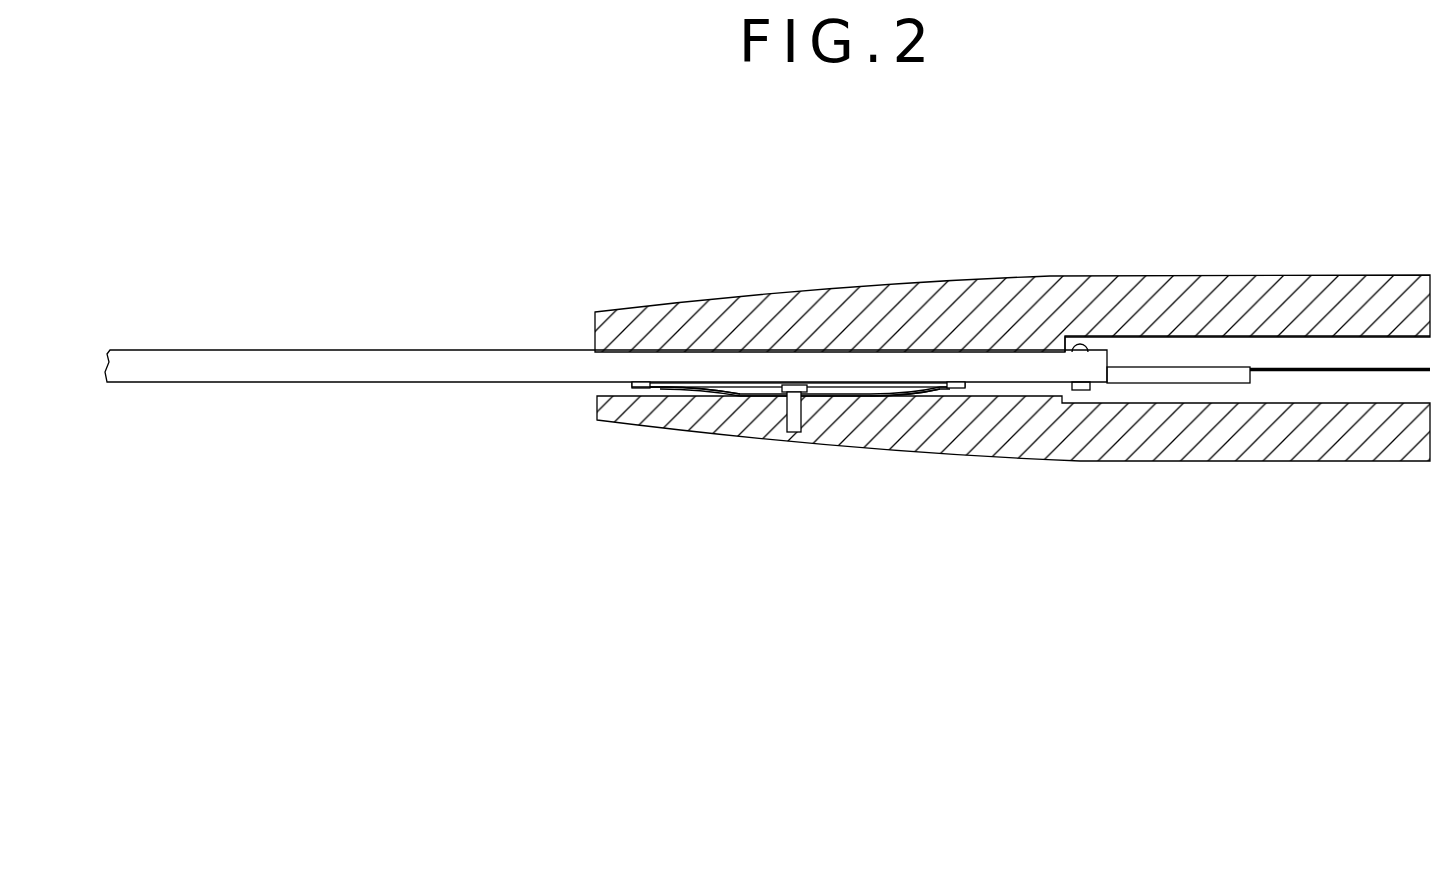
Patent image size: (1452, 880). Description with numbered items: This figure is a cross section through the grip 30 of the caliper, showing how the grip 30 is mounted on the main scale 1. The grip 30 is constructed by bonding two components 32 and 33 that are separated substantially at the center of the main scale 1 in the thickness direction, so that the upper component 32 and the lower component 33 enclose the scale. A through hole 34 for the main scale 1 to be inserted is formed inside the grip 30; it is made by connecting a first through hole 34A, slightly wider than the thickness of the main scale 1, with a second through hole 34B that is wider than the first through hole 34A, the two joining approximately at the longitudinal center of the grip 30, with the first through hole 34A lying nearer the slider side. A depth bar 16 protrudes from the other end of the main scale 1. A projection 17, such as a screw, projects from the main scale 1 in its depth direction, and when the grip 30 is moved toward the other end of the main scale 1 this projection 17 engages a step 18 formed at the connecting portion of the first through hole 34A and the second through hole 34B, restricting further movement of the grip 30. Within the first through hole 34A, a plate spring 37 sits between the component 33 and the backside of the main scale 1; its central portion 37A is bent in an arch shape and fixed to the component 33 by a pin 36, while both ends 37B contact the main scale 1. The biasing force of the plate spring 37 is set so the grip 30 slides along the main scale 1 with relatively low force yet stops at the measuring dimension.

The main scale 1 is at (312, 358).
The grip 30 is at (1019, 229).
The component 32 is at (1394, 290).
The component 33 is at (1365, 455).
The through hole 34 is at (1208, 367).
The first through hole 34A is at (1000, 390).
The second through hole 34B is at (1305, 392).
The pin 36 is at (798, 384).
The plate spring 37 is at (734, 495).
The central portion 37A is at (768, 397).
The both ends 37B is at (660, 389).
The depth bar 16 is at (1157, 375).
The projection 17 is at (1093, 338).
The step 18 is at (1075, 340).